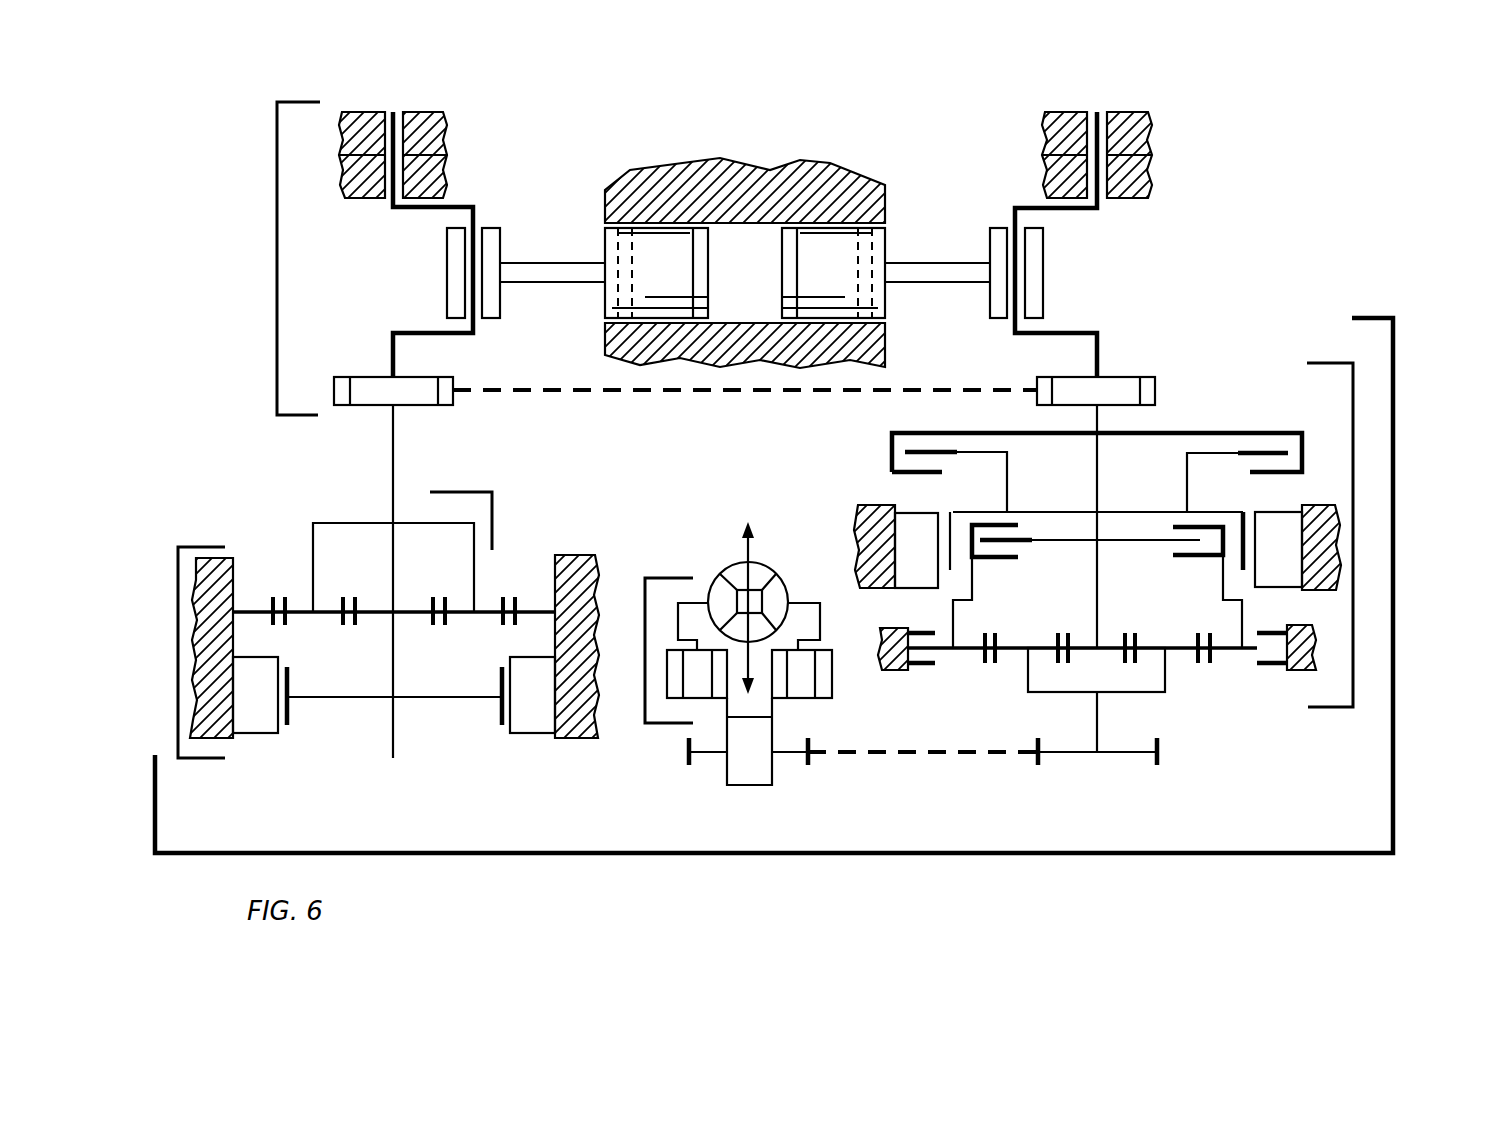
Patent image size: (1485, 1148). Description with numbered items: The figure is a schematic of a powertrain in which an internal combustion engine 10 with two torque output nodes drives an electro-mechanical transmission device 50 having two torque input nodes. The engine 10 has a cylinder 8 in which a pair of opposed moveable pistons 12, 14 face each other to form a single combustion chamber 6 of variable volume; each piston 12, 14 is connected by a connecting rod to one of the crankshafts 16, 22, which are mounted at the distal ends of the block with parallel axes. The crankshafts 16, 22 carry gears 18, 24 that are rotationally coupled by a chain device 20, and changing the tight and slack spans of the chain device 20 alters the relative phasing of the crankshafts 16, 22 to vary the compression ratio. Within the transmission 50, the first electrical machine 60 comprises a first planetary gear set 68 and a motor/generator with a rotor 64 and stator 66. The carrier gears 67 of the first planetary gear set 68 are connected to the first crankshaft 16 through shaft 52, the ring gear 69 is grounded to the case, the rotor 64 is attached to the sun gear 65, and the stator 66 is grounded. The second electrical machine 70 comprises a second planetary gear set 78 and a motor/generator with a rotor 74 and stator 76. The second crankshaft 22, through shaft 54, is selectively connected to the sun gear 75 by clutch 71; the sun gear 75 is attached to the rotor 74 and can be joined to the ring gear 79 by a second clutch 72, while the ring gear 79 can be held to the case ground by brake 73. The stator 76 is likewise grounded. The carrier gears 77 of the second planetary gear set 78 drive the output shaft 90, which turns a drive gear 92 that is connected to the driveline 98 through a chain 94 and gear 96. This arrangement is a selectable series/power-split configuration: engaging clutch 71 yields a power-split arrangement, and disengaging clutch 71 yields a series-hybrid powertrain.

The combustion chamber 6 is at (745, 227).
The cylinder 8 is at (742, 212).
The internal combustion engine 10 is at (277, 333).
The moveable piston 12 is at (665, 240).
The moveable piston 14 is at (825, 245).
The crankshaft 16 is at (403, 155).
The gear 18 is at (370, 390).
The chain device 20 is at (575, 390).
The crankshaft 22 is at (1150, 155).
The gear 24 is at (1117, 390).
The electro-mechanical transmission device 50 is at (1393, 665).
The shaft 52 is at (393, 470).
The shaft 54 is at (1150, 420).
The first electrical machine 60 is at (178, 663).
The rotor 64 is at (288, 715).
The sun gear 65 is at (407, 607).
The stator 66 is at (258, 718).
The carrier gears 67 is at (457, 617).
The first planetary gear set 68 is at (492, 513).
The ring gear 69 is at (525, 607).
The second electrical machine 70 is at (1330, 710).
The clutch 71 is at (1275, 445).
The second clutch 72 is at (1200, 538).
The brake 73 is at (1255, 655).
The rotor 74 is at (958, 524).
The sun gear 75 is at (1118, 648).
The stator 76 is at (915, 525).
The carrier gears 77 is at (1045, 648).
The second planetary gear set 78 is at (1203, 673).
The ring gear 79 is at (975, 655).
The output shaft 90 is at (1100, 700).
The drive gear 92 is at (1103, 755).
The chain 94 is at (937, 755).
The gear 96 is at (712, 752).
The driveline 98 is at (645, 577).